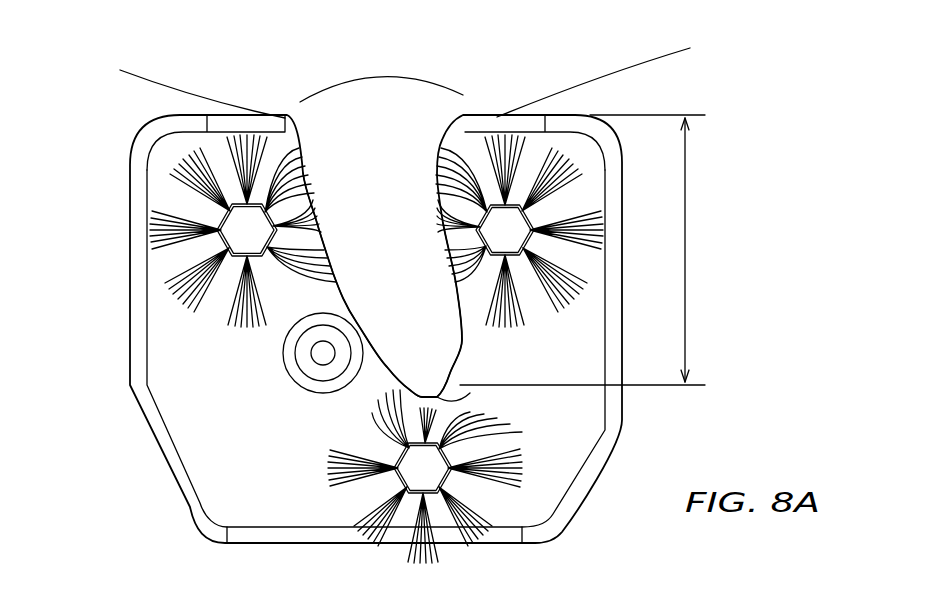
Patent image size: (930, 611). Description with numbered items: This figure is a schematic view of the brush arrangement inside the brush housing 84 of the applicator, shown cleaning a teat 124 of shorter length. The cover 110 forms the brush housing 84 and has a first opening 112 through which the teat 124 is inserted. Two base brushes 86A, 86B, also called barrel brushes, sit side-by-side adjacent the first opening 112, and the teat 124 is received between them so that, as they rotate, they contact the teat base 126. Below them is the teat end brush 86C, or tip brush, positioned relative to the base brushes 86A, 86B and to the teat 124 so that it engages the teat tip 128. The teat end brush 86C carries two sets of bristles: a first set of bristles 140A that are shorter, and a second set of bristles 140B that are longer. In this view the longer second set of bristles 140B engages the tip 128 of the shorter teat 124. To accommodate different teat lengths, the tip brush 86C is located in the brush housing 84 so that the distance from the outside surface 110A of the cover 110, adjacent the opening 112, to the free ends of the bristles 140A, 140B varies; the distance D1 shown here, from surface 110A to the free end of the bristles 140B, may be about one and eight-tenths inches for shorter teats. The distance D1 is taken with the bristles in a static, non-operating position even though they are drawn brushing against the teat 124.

The brush housing 84 is at (125, 133).
The cover 110 is at (130, 280).
The outside surface of the cover 110A is at (548, 127).
The first opening 112 is at (233, 123).
The teat 124 is at (408, 258).
The teat base 126 is at (373, 197).
The teat tip 128 is at (380, 386).
The base brush 86A is at (247, 333).
The base brush 86B is at (502, 333).
The teat end brush 86C is at (401, 476).
The first set of bristles 140A is at (473, 440).
The second set of bristles 140B is at (353, 452).
The distance D1 is at (685, 250).